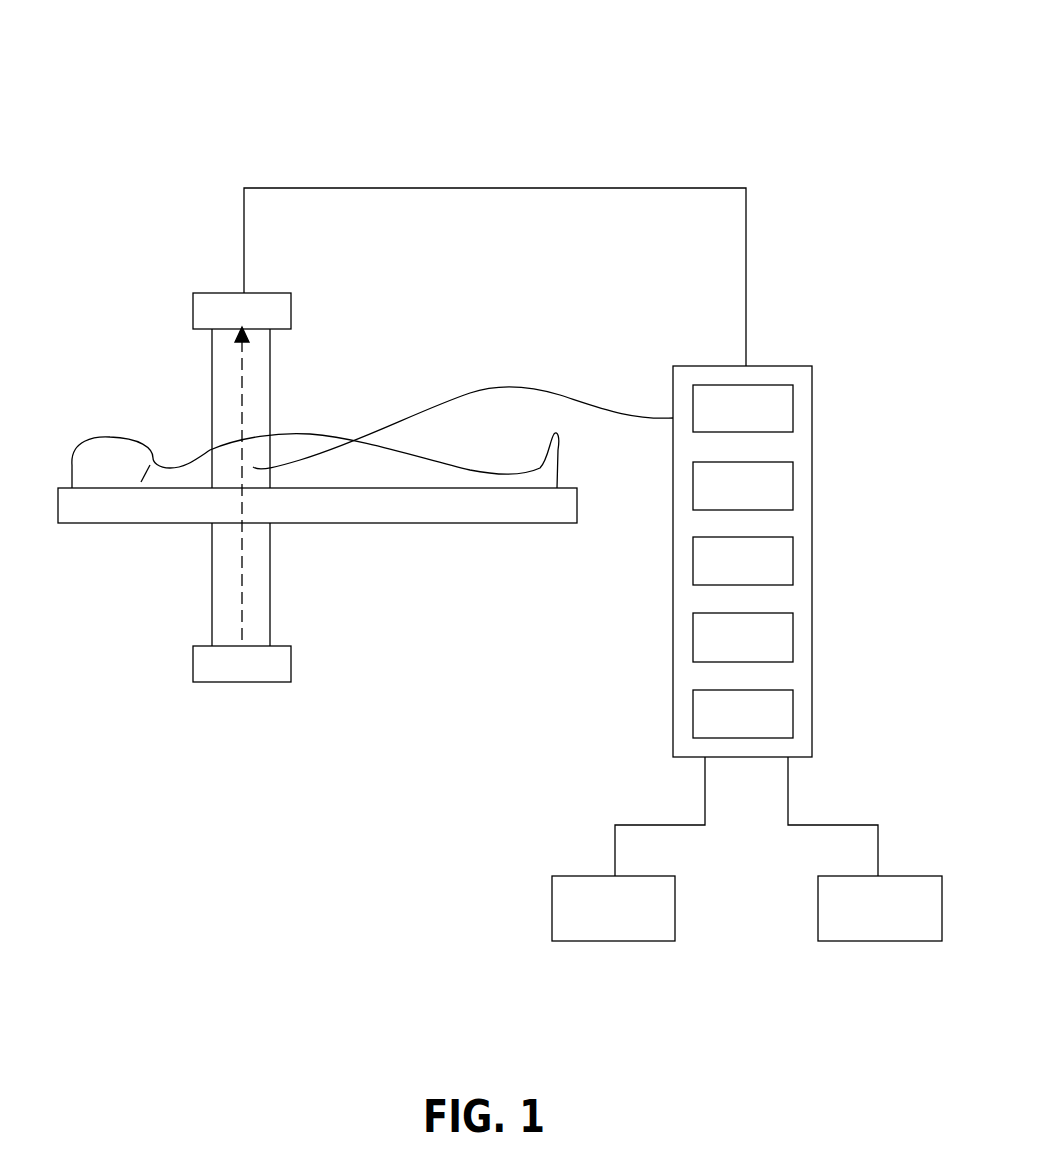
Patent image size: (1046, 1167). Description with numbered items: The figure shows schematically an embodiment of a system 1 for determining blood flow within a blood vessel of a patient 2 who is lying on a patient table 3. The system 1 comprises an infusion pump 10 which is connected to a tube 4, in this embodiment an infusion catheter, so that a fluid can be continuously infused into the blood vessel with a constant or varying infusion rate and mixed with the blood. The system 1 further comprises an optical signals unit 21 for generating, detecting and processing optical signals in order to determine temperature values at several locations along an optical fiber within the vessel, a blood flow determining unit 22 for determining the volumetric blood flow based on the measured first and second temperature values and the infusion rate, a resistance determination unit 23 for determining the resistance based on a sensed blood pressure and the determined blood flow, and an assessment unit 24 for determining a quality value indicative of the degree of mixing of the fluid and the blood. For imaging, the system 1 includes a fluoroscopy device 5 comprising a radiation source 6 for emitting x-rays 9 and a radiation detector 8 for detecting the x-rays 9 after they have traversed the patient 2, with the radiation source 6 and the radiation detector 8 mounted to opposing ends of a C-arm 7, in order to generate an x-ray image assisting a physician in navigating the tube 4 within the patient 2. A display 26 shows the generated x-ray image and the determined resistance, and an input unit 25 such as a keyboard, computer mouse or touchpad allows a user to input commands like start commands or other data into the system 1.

The system 1 is at (315, 120).
The patient 2 is at (113, 437).
The patient table 3 is at (117, 524).
The tube 4 is at (489, 387).
The fluoroscopy device 5 is at (259, 492).
The radiation source 6 is at (291, 660).
The C-arm 7 is at (270, 570).
The radiation detector 8 is at (205, 290).
The x-rays 9 is at (242, 590).
The infusion pump 10 is at (793, 403).
The optical signals unit 21 is at (793, 481).
The blood flow determining unit 22 is at (793, 557).
The resistance determination unit 23 is at (793, 632).
The assessment unit 24 is at (793, 708).
The input unit 25 is at (580, 941).
The display 26 is at (862, 941).